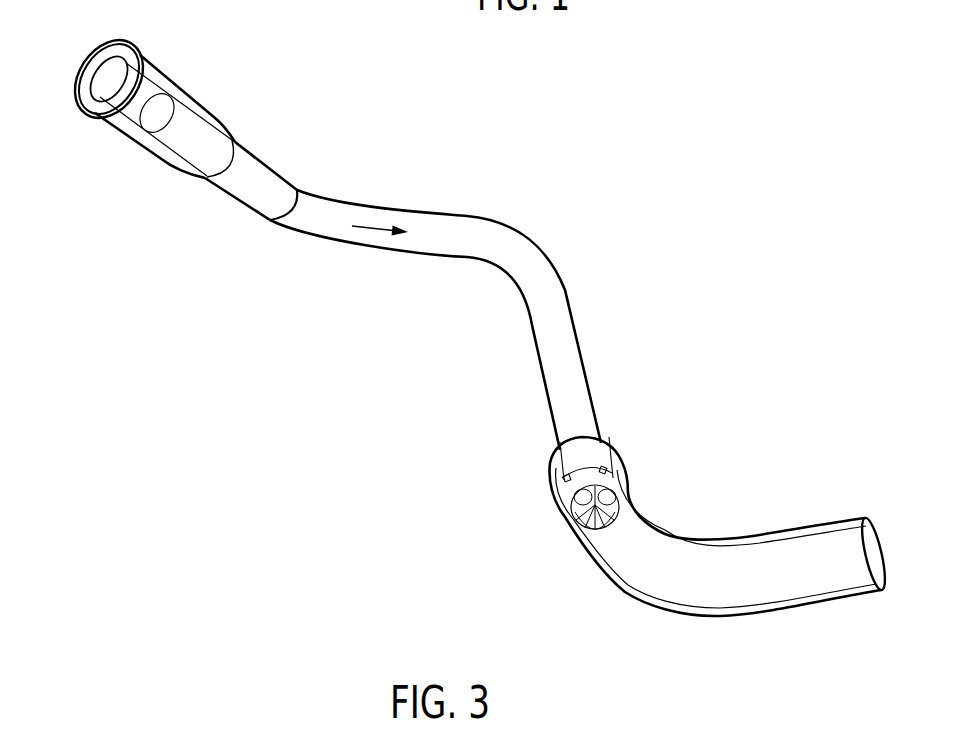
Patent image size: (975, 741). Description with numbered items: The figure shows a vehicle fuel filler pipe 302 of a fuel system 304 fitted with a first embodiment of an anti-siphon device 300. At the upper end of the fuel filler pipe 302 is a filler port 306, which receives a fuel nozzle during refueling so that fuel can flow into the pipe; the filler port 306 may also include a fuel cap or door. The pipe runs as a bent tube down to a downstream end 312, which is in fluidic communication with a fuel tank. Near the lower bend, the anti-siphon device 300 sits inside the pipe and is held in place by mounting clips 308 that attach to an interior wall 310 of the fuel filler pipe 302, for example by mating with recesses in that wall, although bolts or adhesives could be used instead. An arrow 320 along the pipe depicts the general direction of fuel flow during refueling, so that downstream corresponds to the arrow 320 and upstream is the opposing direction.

The anti-siphon device 300 is at (610, 545).
The fuel filler pipe 302 is at (598, 319).
The fuel system 304 is at (722, 78).
The filler port 306 is at (88, 29).
The mounting clips 308 is at (553, 478).
The interior wall 310 is at (598, 454).
The downstream end 312 is at (880, 526).
The arrow 320 is at (358, 213).